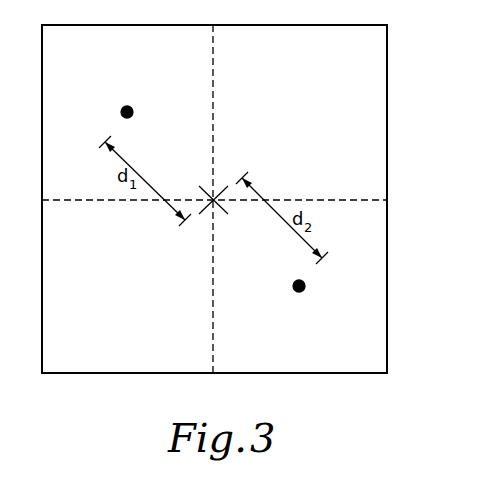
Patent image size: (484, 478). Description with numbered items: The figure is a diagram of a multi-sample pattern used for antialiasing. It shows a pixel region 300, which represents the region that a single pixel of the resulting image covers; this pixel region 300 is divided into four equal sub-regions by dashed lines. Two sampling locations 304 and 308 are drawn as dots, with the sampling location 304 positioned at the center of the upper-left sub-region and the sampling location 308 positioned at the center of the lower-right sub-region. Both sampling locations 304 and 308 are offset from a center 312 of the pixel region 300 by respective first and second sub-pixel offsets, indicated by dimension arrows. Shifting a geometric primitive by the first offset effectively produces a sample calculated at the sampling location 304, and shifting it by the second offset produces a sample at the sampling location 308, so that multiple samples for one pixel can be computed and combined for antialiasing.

The pixel region 300 is at (387, 67).
The sampling location 304 is at (133, 113).
The sampling location 308 is at (305, 287).
The center 312 is at (240, 219).